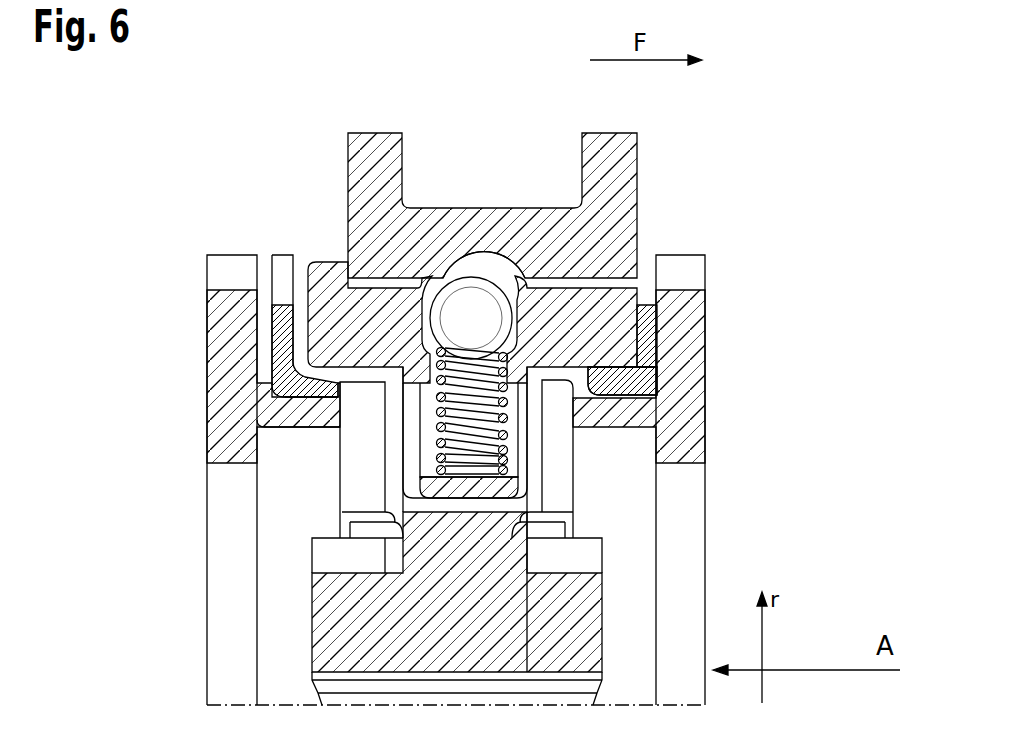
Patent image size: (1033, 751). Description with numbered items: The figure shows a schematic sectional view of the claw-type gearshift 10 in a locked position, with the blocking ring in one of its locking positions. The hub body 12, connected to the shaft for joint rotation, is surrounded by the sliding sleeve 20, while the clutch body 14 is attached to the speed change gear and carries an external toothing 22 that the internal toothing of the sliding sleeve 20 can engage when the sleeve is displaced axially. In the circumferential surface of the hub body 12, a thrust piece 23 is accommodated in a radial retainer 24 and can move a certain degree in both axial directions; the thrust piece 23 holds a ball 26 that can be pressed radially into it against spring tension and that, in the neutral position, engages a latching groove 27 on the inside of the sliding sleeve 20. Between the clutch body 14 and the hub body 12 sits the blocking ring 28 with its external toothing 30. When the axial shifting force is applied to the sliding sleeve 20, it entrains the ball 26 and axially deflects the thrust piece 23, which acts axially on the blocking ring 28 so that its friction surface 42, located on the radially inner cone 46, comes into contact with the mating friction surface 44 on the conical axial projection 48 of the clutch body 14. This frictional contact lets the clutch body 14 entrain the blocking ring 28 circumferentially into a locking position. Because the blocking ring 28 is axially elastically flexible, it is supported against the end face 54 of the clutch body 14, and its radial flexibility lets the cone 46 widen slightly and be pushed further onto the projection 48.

The claw-type gearshift 10 is at (255, 95).
The hub body 12 is at (353, 498).
The clutch body 14 is at (228, 360).
The sliding sleeve 20 is at (612, 160).
The external toothing 22 is at (226, 275).
The thrust piece 23 is at (610, 340).
The radial retainer 24 is at (517, 457).
The ball 26 is at (476, 300).
The latching groove 27 is at (498, 263).
The blocking ring 28 is at (277, 340).
The external toothing 30 is at (283, 275).
The friction surface 42 is at (600, 413).
The mating friction surface 44 is at (720, 393).
The radially inner cone 46 is at (300, 403).
The conical axial projection 48 is at (305, 418).
The end face 54 is at (657, 313).